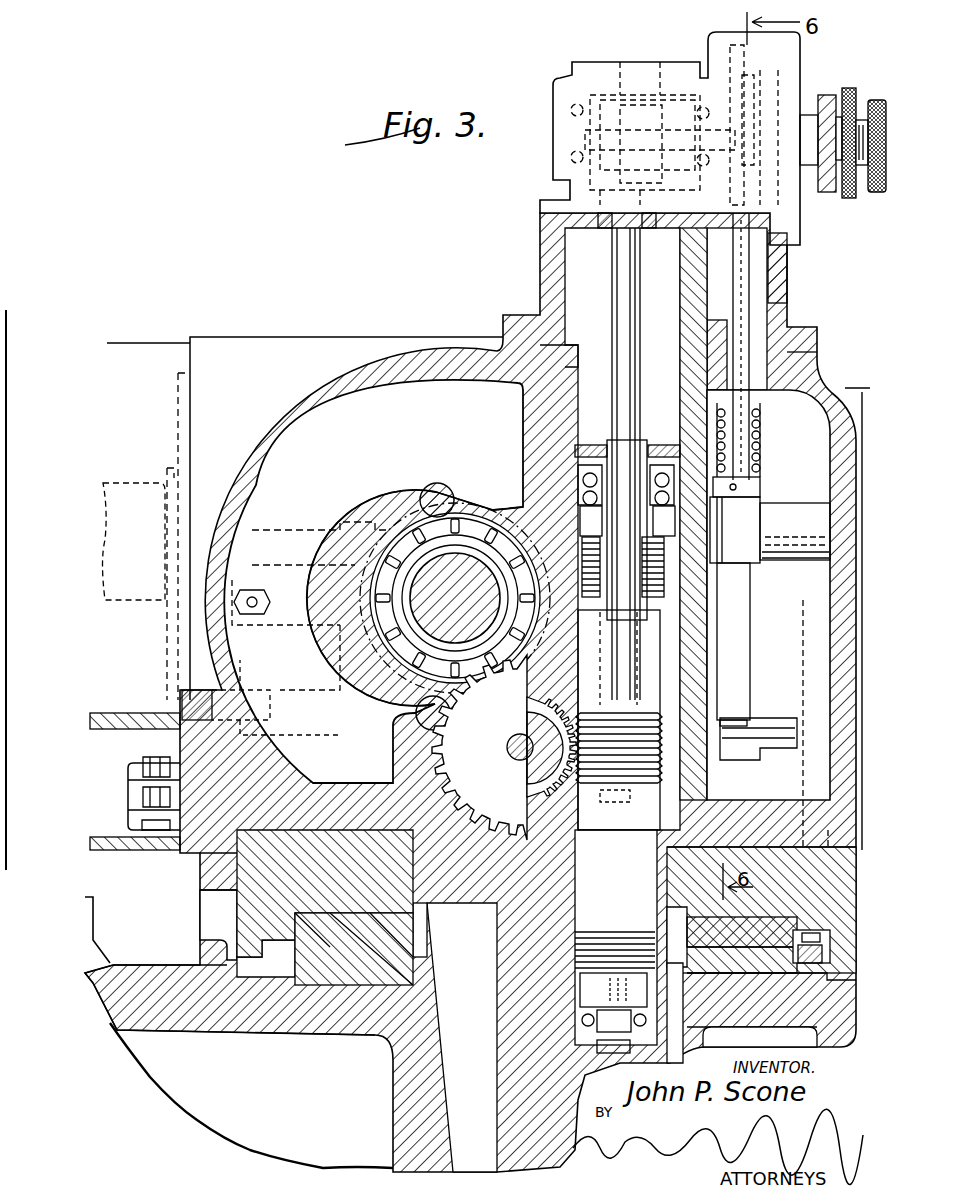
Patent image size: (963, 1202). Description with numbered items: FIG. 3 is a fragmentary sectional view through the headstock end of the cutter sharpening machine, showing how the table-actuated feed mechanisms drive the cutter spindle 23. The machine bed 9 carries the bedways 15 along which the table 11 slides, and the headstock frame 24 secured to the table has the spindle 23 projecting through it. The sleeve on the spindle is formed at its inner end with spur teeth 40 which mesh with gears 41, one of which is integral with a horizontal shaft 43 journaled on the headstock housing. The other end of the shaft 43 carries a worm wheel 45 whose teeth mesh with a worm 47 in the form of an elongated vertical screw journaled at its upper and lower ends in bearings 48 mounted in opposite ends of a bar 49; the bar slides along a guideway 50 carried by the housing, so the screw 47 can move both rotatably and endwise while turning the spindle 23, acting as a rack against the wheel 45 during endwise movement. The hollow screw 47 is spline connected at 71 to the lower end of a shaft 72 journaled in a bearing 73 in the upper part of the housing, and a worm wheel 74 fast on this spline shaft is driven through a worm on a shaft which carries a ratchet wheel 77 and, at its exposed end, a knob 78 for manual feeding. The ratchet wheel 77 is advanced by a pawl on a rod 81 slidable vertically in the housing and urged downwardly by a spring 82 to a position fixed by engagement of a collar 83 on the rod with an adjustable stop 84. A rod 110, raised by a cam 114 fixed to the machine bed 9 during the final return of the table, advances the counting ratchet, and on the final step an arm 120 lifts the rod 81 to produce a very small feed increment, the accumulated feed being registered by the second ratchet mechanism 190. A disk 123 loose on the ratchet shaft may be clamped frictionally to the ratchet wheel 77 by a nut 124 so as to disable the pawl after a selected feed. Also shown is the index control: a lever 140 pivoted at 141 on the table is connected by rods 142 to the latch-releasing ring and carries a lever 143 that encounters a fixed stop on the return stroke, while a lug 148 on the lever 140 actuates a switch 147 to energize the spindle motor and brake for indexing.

The machine bed 9 is at (398, 1073).
The table 11 is at (252, 906).
The bedways 15 is at (330, 935).
The spindle 23 is at (470, 608).
The headstock frame 24 is at (278, 348).
The spur teeth 40 is at (487, 520).
The gears 41 is at (486, 734).
The horizontal shaft 43 is at (516, 758).
The worm wheel 45 is at (560, 717).
The worm 47 is at (622, 844).
The bearings 48 is at (582, 470).
The bar 49 is at (676, 455).
The guideway 50 is at (582, 365).
The spline connection 71 is at (614, 430).
The shaft 72 is at (622, 288).
The bearing 73 is at (652, 230).
The worm wheel 74 is at (580, 142).
The ratchet wheel 77 is at (750, 72).
The knob 78 is at (893, 86).
The rod 81 is at (770, 270).
The spring 82 is at (762, 435).
The collar 83 is at (762, 486).
The stop 84 is at (758, 565).
The rod 110 is at (822, 940).
The cam 114 is at (810, 963).
The arm 120 is at (733, 750).
The disk 123 is at (826, 95).
The nut 124 is at (862, 70).
The lever 140 is at (280, 647).
The pivot 141 is at (350, 525).
The rods 142 is at (446, 484).
The lever 143 is at (128, 790).
The switch 147 is at (142, 483).
The lug 148 is at (262, 700).
The second ratchet mechanism 190 is at (706, 55).